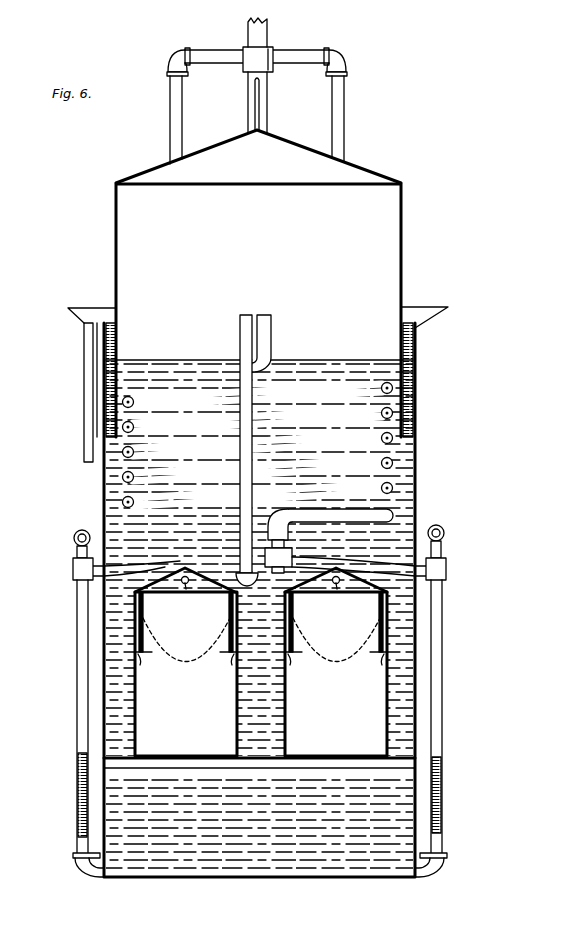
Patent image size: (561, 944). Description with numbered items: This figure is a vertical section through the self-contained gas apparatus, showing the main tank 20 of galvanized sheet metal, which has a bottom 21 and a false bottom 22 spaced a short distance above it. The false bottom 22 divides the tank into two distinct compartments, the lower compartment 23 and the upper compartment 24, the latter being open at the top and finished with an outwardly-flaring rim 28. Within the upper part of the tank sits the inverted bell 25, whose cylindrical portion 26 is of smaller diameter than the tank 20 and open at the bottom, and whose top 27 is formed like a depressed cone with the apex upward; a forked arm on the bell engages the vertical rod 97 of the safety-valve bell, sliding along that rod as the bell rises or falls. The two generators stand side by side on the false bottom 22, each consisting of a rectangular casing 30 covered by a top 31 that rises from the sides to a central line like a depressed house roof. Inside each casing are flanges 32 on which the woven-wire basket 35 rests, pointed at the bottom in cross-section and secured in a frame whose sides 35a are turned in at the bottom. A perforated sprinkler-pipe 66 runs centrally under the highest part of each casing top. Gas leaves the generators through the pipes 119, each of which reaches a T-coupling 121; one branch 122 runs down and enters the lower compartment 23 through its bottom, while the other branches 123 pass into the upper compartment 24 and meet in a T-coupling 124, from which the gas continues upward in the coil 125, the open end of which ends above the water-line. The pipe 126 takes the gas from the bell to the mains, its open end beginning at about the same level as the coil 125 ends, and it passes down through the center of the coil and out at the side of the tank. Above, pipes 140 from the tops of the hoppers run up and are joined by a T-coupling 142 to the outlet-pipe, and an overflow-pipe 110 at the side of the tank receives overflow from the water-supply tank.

The T-coupling 142 is at (268, 58).
The pipe 140 is at (183, 104).
The vertical rod 97 is at (260, 104).
The top of the bell 27 is at (292, 142).
The cylindrical portion 26 is at (118, 250).
The bell 25 is at (253, 263).
The outwardly-flaring rim 28 is at (444, 317).
The pipe 126 is at (239, 331).
The coil 125 is at (272, 331).
The overflow-pipe 110 is at (84, 385).
The main tank 20 is at (416, 421).
The pipe 119 is at (74, 540).
The T-coupling 121 is at (73, 577).
The branch 123 is at (178, 566).
The T-coupling 124 is at (278, 568).
The sprinkler-pipe 66 is at (184, 586).
The top 31 is at (216, 584).
The sides 35a is at (144, 616).
The basket 35 is at (261, 640).
The flanges 32 is at (232, 655).
The casing 30 is at (261, 674).
The upper compartment 24 is at (404, 638).
The branch 122 is at (77, 669).
The lower compartment 23 is at (259, 769).
The false bottom 22 is at (397, 762).
The bottom 21 is at (383, 875).